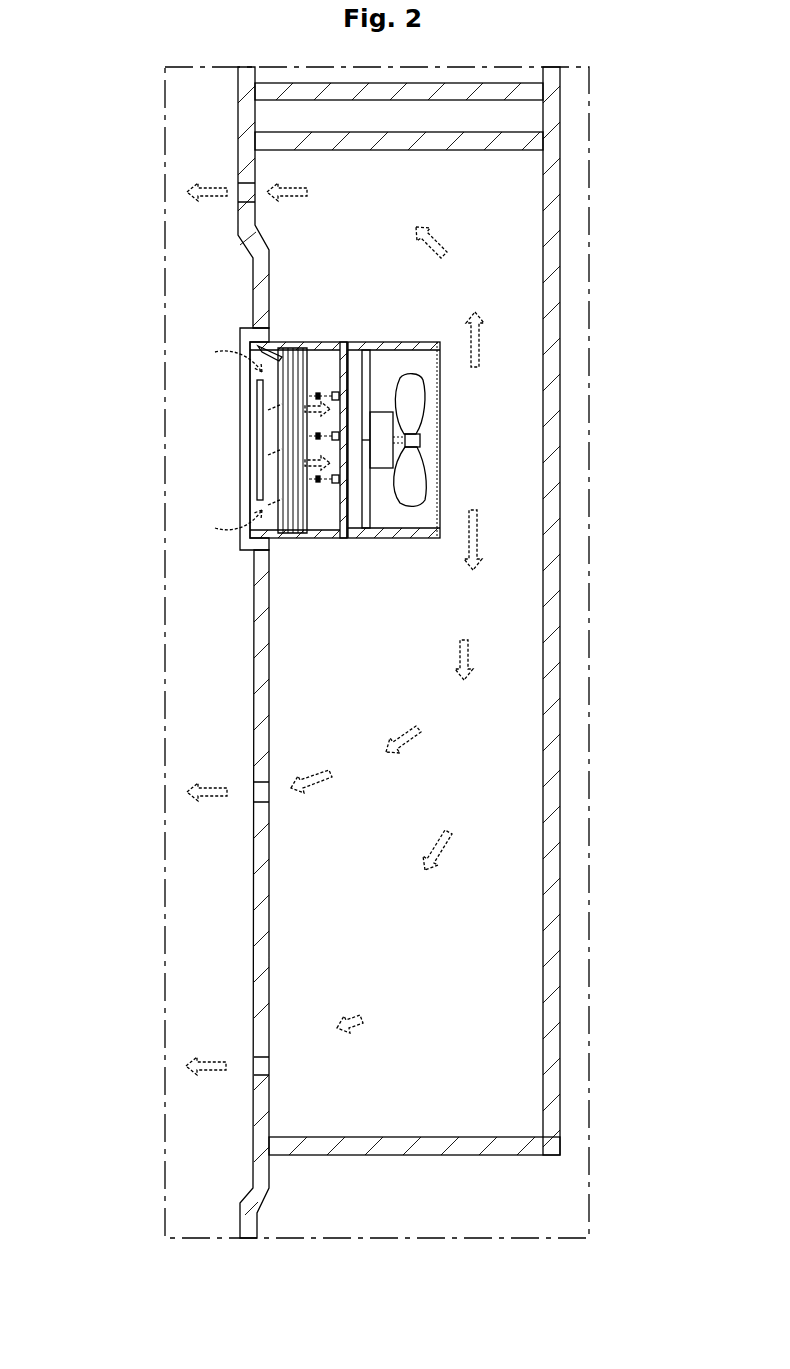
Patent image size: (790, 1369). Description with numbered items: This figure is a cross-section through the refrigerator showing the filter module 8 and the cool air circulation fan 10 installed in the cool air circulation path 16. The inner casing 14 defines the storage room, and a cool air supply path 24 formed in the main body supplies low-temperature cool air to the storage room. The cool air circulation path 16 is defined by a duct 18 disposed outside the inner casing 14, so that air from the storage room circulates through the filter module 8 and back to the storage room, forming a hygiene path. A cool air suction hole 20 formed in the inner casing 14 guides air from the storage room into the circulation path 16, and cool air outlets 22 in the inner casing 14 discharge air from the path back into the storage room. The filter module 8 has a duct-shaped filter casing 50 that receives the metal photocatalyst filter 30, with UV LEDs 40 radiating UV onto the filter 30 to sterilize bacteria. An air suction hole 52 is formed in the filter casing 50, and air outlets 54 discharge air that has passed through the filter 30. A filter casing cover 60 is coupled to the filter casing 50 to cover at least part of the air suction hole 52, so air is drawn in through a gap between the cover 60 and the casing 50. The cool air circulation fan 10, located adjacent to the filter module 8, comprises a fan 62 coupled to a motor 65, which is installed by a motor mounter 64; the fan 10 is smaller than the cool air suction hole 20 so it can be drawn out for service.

The filter module 8 is at (364, 494).
The cool air circulation fan 10 is at (450, 430).
The inner casing 14 is at (260, 1115).
The cool air circulation path 16 is at (297, 745).
The duct 18 is at (387, 1148).
The cool air suction hole 20 is at (248, 425).
The cool air outlets 22 is at (247, 195).
The cool air supply path 24 is at (297, 78).
The metal photocatalyst filter 30 is at (296, 488).
The UV LEDs 40 is at (333, 395).
The filter casing 50 is at (305, 540).
The air suction hole 52 is at (312, 481).
The air outlets 54 is at (343, 377).
The filter casing cover 60 is at (260, 388).
The fan 62 is at (418, 477).
The motor mounter 64 is at (367, 507).
The motor 65 is at (380, 433).